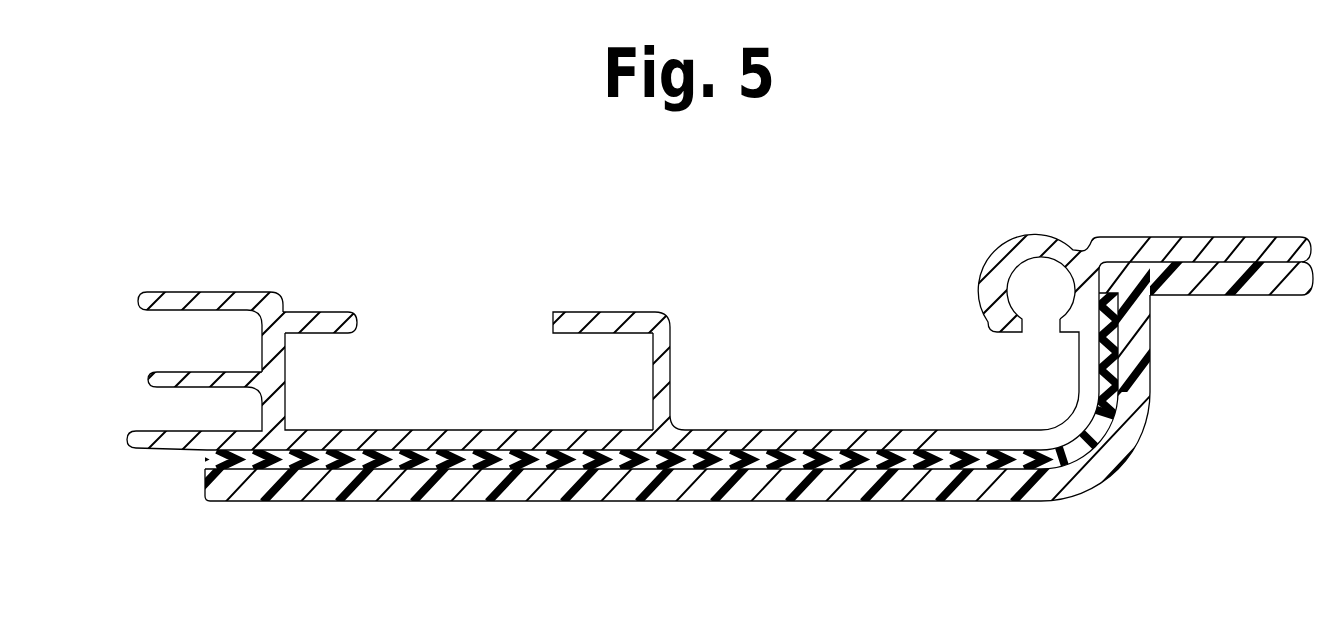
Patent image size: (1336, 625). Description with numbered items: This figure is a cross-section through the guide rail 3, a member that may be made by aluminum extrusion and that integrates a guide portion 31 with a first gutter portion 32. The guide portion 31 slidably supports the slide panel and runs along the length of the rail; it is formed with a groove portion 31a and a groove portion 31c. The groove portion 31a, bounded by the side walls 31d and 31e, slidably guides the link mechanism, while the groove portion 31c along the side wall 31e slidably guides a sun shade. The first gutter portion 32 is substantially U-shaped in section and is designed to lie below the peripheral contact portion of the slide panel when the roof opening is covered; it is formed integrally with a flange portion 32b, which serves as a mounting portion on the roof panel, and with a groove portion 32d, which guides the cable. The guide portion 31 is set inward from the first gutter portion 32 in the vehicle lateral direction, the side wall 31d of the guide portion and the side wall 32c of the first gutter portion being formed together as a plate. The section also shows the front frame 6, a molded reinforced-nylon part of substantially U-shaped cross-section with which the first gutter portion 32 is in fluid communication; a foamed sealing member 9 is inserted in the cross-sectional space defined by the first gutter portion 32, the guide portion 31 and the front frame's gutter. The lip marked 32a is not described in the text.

The guide rail 3 is at (423, 343).
The front frame 6 is at (1070, 497).
The foamed sealing member 9 is at (1100, 420).
The guide portion 31 is at (480, 430).
The groove portion 31a is at (318, 348).
The groove portion 31c is at (187, 370).
The side wall 31d is at (650, 390).
The side wall 31e is at (193, 303).
The first gutter portion 32 is at (912, 430).
The inner rib 32a is at (1083, 380).
The flange portion 32b is at (1226, 245).
The side wall 32c is at (670, 353).
The groove portion 32d is at (1038, 272).